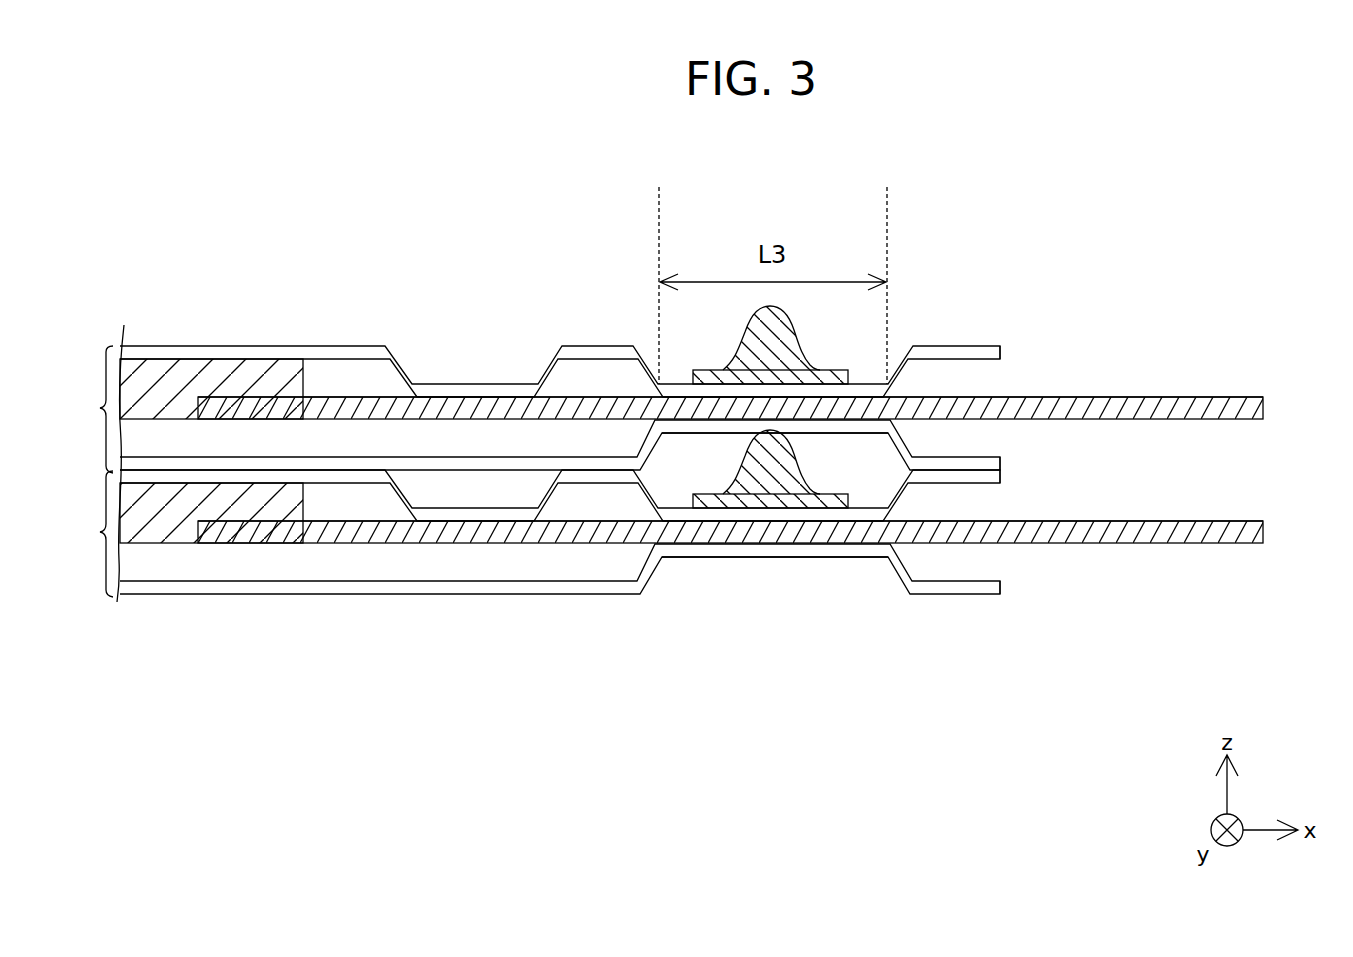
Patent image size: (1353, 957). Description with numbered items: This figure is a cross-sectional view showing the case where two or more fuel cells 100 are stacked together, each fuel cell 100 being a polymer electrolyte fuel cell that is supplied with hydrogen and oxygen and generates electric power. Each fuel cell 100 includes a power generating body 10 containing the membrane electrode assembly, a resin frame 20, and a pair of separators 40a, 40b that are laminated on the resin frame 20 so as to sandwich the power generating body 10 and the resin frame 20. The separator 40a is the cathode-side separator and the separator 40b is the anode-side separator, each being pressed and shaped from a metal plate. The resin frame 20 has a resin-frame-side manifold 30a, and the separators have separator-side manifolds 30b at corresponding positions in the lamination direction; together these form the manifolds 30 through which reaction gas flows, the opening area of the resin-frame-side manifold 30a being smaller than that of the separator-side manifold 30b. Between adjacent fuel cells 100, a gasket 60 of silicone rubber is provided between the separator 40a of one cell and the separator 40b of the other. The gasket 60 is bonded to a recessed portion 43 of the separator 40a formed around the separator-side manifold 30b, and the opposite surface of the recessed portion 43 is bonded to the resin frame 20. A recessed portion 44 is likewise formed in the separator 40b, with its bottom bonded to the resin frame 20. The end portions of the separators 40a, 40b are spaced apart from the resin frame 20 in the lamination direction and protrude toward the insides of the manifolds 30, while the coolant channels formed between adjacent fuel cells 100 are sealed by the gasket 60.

The power generating body 10 is at (161, 364).
The fuel cell 100 is at (83, 471).
The resin frame 20 is at (1181, 397).
The manifolds 30 is at (1231, 649).
The resin-frame-side manifold 30a is at (1266, 406).
The separator-side manifold 30b is at (1003, 352).
The separator 40a is at (947, 345).
The separator 40b is at (942, 455).
The recessed portion 43 is at (869, 384).
The recessed portion 44 is at (712, 433).
The gasket 60 is at (792, 344).